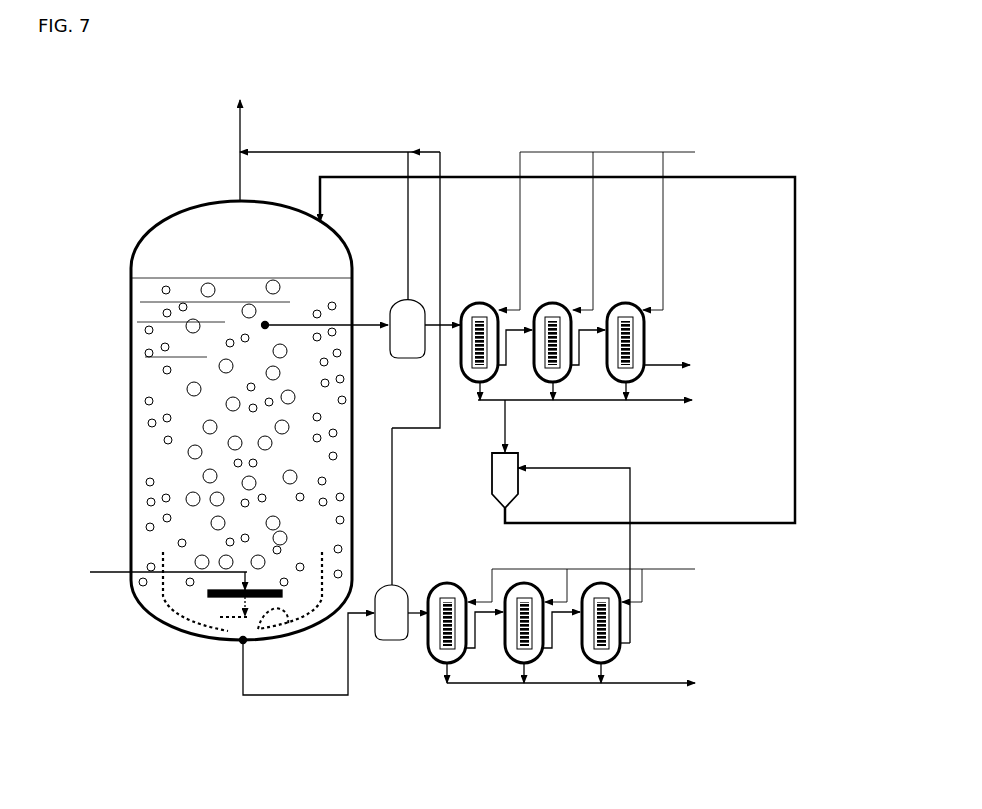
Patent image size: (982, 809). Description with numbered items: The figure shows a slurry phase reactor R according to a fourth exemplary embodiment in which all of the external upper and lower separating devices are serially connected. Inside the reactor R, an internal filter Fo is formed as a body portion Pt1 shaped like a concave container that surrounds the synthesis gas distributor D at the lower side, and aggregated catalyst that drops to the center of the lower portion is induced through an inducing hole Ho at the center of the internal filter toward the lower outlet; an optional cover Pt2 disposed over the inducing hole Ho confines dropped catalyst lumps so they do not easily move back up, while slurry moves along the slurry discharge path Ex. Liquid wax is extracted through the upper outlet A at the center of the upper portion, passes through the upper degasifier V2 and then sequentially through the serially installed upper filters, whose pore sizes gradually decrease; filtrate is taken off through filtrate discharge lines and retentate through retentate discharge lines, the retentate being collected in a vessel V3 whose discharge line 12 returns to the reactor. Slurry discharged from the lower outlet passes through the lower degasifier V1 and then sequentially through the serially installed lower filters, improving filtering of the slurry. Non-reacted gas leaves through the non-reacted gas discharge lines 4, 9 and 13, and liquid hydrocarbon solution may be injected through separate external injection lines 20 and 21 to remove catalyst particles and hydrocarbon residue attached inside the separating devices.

The slurry phase reactor R is at (194, 420).
The upper outlet A is at (312, 279).
The slurry discharge path Ex is at (232, 474).
The non-reacted gas discharge line 13 is at (196, 150).
The non-reacted gas discharge line 9 is at (340, 238).
The external injection line 20 is at (603, 184).
The upper degasifier V2 is at (407, 281).
The vessel V3 is at (468, 480).
The recirculation line 12 is at (557, 350).
The non-reacted gas discharge line 4 is at (430, 506).
The internal filter Fo is at (152, 529).
The synthesis gas distributor D is at (200, 644).
The body portion Pt1 is at (191, 628).
The cover Pt2 is at (282, 614).
The inducing hole Ho is at (257, 673).
The lower degasifier V1 is at (386, 667).
The external injection line 21 is at (592, 605).